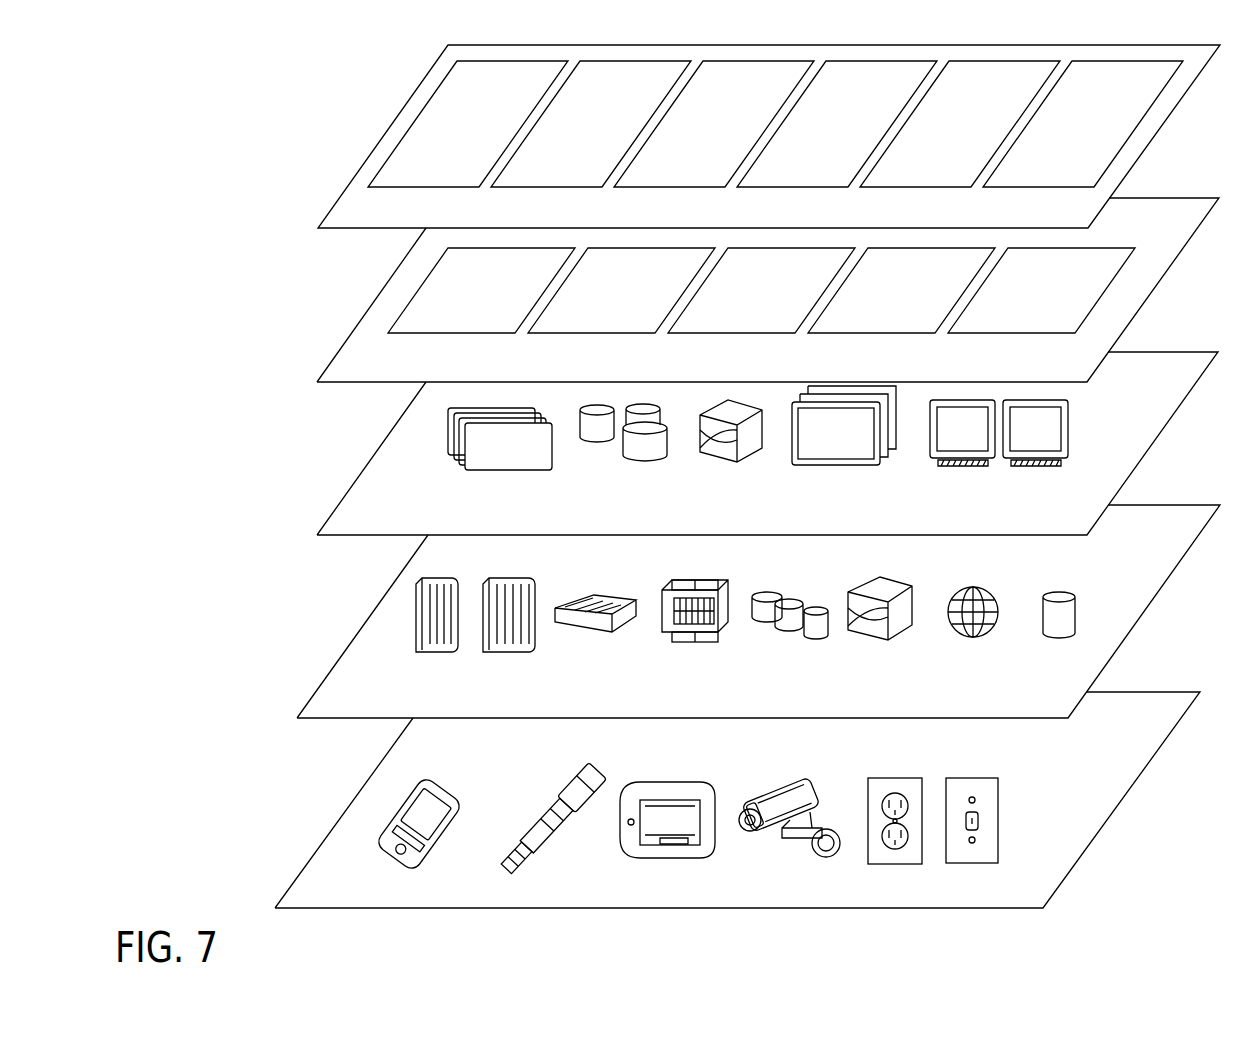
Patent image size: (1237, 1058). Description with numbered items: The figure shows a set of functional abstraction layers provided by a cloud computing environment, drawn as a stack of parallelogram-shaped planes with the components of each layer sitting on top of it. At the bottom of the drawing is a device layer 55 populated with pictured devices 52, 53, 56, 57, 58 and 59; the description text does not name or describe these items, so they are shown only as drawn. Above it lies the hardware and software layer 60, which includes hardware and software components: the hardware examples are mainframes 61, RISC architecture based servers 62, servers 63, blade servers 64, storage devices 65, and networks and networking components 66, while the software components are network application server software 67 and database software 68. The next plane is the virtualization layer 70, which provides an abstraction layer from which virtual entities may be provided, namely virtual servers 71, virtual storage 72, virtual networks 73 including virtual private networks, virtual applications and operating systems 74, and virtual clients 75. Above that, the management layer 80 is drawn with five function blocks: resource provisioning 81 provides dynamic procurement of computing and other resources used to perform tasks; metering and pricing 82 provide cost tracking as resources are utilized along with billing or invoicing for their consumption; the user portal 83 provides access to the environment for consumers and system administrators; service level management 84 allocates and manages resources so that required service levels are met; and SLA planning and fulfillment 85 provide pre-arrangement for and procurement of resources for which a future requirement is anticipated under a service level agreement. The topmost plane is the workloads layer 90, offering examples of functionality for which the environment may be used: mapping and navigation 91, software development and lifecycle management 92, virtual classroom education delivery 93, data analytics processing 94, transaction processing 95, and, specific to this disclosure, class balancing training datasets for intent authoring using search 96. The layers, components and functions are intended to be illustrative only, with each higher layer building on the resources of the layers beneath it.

The sensor 52 is at (447, 845).
The actuator 53 is at (568, 830).
The device layer 55 is at (348, 909).
The learning thermostat 56 is at (673, 859).
The camera 57 is at (801, 862).
The controllable household outlet/receptacle 58 is at (895, 865).
The controllable electrical switch 59 is at (972, 864).
The hardware and software layer 60 is at (349, 719).
The mainframes 61 is at (426, 651).
The RISC architecture based servers 62 is at (494, 653).
The servers 63 is at (600, 633).
The blade servers 64 is at (706, 643).
The storage devices 65 is at (812, 640).
The networks and networking components 66 is at (890, 641).
The network application server software 67 is at (984, 637).
The database software 68 is at (1065, 638).
The virtualization layer 70 is at (355, 536).
The virtual servers 71 is at (536, 471).
The virtual storage 72 is at (651, 459).
The virtual networks 73 is at (739, 463).
The virtual applications and operating systems 74 is at (855, 466).
The virtual clients 75 is at (999, 466).
The management layer 80 is at (355, 383).
The resource provisioning 81 is at (470, 297).
The metering and pricing 82 is at (610, 297).
The user portal 83 is at (750, 297).
The service level management 84 is at (890, 297).
The SLA planning and fulfillment 85 is at (1030, 297).
The workloads layer 90 is at (356, 229).
The mapping and navigation 91 is at (457, 129).
The software development and lifecycle management 92 is at (580, 129).
The virtual classroom education delivery 93 is at (703, 129).
The data analytics processing 94 is at (826, 129).
The transaction processing 95 is at (949, 129).
The class balancing training datasets for intent authoring using search 96 is at (1072, 129).